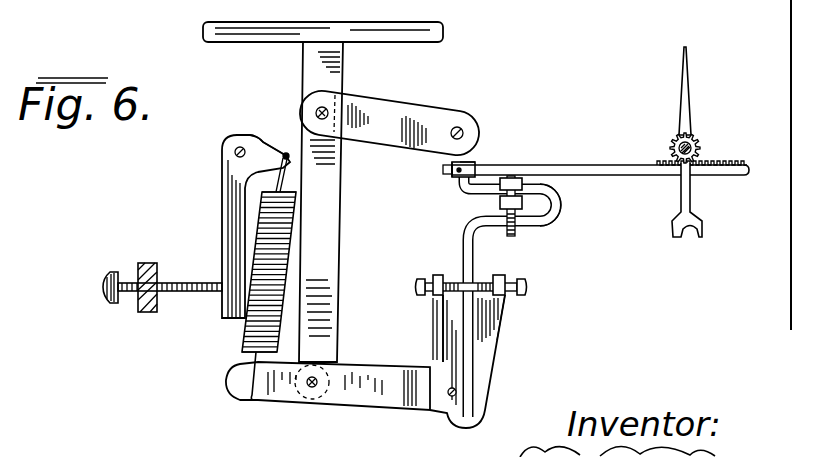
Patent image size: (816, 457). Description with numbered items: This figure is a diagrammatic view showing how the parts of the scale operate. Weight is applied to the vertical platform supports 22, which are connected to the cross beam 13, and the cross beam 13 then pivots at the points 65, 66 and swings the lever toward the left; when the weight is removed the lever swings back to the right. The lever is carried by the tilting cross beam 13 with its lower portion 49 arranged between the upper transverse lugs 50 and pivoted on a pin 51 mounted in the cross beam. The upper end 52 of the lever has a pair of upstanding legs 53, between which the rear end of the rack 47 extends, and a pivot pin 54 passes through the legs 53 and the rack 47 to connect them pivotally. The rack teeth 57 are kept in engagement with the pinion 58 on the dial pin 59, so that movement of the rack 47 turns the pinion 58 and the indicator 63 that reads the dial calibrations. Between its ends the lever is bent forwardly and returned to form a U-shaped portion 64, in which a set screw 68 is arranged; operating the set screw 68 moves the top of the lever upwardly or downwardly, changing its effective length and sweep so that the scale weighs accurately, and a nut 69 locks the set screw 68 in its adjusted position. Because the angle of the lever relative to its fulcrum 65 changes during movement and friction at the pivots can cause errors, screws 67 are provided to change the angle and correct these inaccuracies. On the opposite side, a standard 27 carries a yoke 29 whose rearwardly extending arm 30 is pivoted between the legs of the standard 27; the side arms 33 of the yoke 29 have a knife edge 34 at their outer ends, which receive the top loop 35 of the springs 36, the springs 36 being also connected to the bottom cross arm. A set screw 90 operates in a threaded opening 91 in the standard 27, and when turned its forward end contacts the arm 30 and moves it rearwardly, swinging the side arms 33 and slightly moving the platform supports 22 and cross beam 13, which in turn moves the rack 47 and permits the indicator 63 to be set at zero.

The cross beam 13 is at (498, 370).
The vertical platform supports 22 is at (343, 78).
The standard 27 is at (148, 313).
The yoke 29 is at (225, 142).
The rearwardly extending arm 30 is at (230, 322).
The side arms 33 is at (262, 140).
The knife edge 34 is at (282, 153).
The top loop 35 is at (283, 185).
The springs 36 is at (288, 256).
The rack 47 is at (600, 154).
The lower portion of the lever 49 is at (476, 325).
The upper transverse lugs 50 is at (440, 273).
The pin 51 is at (471, 410).
The upper end of the lever 52 is at (458, 186).
The upstanding legs 53 is at (470, 160).
The pivot pin 54 is at (476, 163).
The rack teeth 57 is at (710, 162).
The pinion 58 is at (694, 134).
The dial pin 59 is at (681, 143).
The indicator 63 is at (688, 88).
The U-shaped portion 64 is at (561, 207).
The pivot point 65 is at (308, 387).
The pivot point 66 is at (448, 398).
The screws 67 is at (414, 288).
The set screw 68 is at (523, 176).
The nut 69 is at (482, 206).
The set screw 90 is at (127, 280).
The threaded opening 91 is at (158, 283).